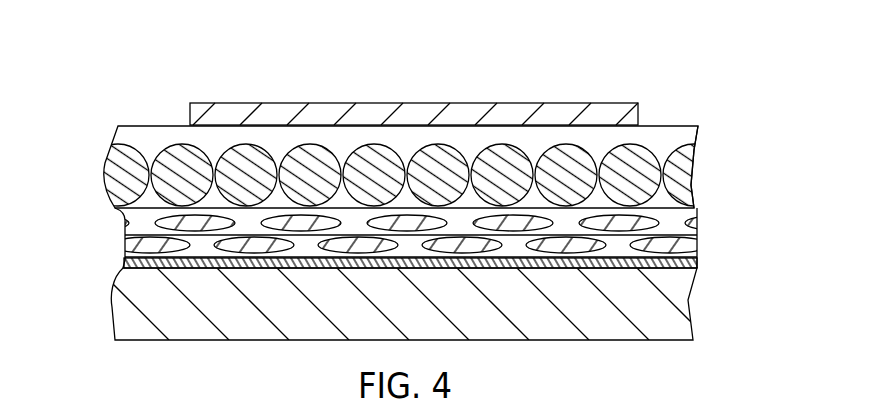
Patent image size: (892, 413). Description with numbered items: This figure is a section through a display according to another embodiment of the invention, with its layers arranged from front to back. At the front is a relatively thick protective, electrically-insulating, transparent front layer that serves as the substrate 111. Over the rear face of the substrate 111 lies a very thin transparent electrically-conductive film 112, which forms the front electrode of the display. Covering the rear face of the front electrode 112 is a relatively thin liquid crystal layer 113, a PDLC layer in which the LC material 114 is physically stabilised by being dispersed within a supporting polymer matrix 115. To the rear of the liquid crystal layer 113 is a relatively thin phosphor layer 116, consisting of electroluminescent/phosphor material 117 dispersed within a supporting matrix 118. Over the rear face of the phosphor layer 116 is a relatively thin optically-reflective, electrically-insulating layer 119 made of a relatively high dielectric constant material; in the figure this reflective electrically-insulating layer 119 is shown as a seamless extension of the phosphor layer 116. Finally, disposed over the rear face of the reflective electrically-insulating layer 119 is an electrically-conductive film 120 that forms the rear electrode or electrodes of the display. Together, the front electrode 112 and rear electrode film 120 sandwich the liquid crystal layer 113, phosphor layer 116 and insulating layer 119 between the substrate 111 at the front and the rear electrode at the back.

The substrate 111 is at (685, 305).
The transparent electrically-conductive film 112 is at (700, 263).
The liquid crystal layer 113 is at (705, 232).
The LC material 114 is at (128, 245).
The supporting polymer matrix 115 is at (128, 214).
The phosphor layer 116 is at (698, 128).
The electroluminescent/phosphor material 117 is at (562, 152).
The supporting matrix 118 is at (663, 138).
The reflective electrically-insulating layer 119 is at (150, 138).
The electrically-conductive film 120 is at (412, 103).